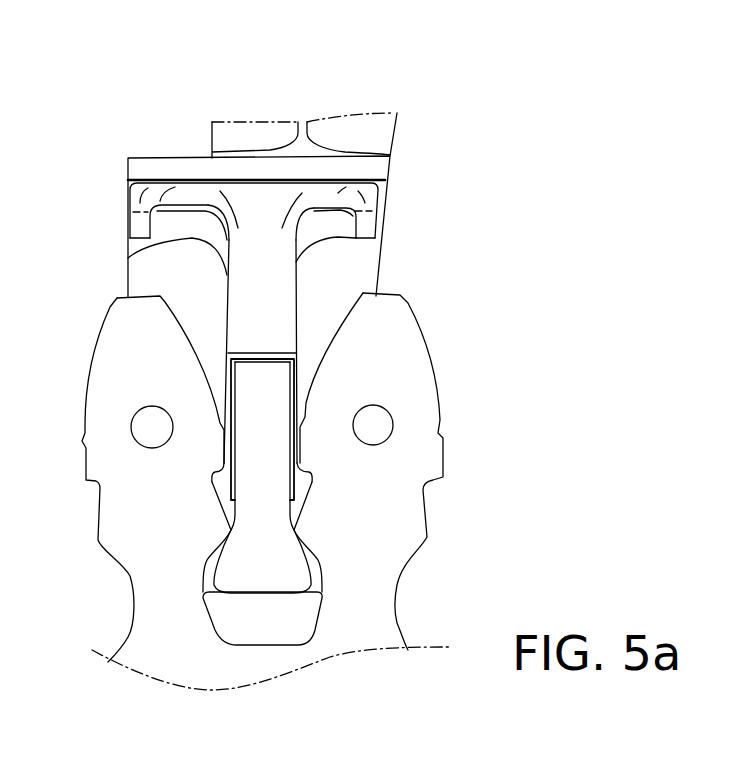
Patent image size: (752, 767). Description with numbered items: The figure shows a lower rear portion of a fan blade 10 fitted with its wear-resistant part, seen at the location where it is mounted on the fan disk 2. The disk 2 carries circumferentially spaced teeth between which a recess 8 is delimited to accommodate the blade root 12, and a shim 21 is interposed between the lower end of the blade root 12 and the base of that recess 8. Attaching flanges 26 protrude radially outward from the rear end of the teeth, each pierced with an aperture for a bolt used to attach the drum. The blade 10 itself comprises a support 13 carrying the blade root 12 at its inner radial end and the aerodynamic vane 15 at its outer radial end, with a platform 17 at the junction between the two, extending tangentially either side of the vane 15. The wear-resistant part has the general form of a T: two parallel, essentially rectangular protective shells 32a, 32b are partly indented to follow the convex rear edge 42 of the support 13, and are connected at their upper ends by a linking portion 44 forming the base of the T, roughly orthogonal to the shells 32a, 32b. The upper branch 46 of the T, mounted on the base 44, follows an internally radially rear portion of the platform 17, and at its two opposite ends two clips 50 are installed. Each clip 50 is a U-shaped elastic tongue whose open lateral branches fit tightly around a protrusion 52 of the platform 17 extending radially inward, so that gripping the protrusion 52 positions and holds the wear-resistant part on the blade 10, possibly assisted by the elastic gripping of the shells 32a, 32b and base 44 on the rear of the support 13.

The disk 2 is at (305, 646).
The recess 8 is at (317, 585).
The fan blade 10 is at (423, 178).
The blade root 12 is at (287, 577).
The support 13 is at (280, 547).
The vane 15 is at (341, 98).
The platform 17 is at (182, 167).
The shim 21 is at (223, 623).
The attaching flanges 26 is at (123, 322).
The protective shell 32a is at (298, 459).
The protective shell 32b is at (230, 458).
The rear edge 42 is at (262, 373).
The linking portion 44 is at (265, 320).
The upper branch 46 is at (184, 208).
The clips 50 is at (143, 225).
The protrusion 52 is at (188, 211).